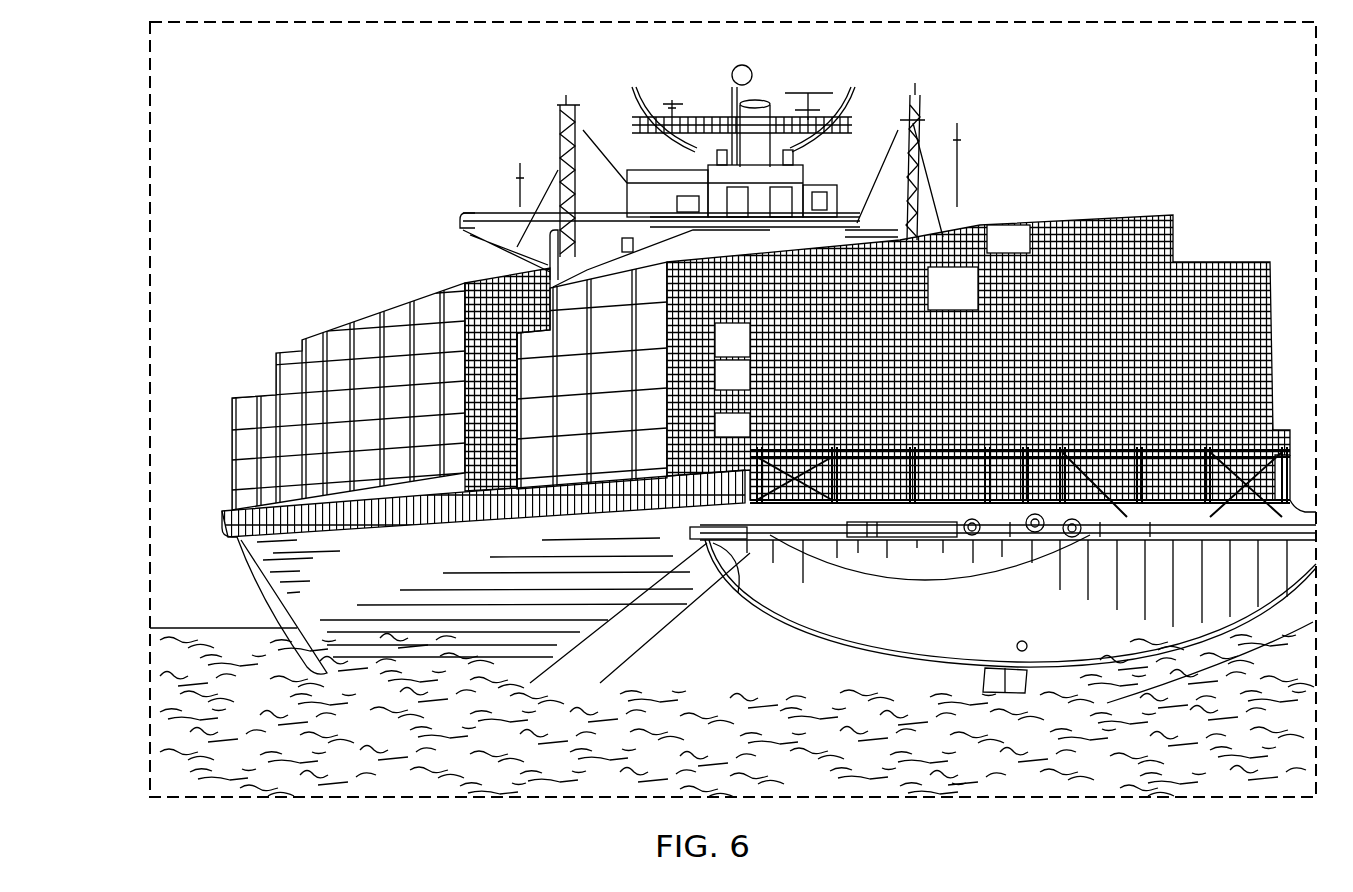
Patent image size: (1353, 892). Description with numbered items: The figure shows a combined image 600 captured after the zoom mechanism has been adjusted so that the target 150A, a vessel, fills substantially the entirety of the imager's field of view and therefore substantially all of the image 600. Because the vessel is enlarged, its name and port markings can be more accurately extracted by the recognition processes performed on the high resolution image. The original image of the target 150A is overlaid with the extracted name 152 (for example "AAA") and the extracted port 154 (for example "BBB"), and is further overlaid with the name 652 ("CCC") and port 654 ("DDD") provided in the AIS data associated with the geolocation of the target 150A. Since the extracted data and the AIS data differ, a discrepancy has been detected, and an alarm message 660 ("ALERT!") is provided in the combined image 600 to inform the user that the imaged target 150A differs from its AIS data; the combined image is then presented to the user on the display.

The name 152 is at (190, 51).
The port 154 is at (190, 83).
The name 652 is at (190, 173).
The port 654 is at (190, 212).
The alarm message 660 is at (190, 260).
The image 600 is at (1172, 88).
The target 150A is at (1078, 213).